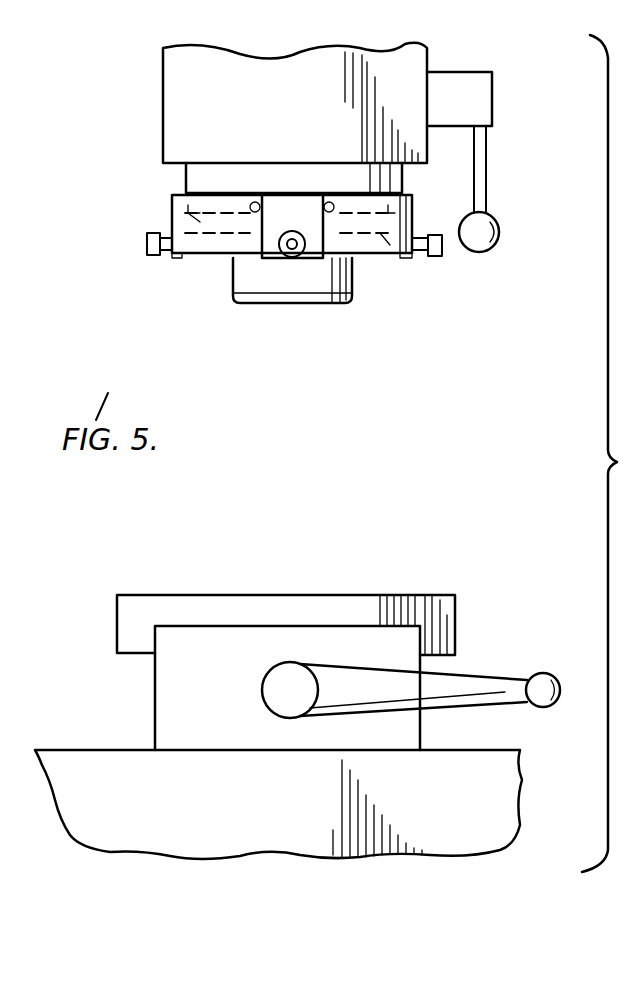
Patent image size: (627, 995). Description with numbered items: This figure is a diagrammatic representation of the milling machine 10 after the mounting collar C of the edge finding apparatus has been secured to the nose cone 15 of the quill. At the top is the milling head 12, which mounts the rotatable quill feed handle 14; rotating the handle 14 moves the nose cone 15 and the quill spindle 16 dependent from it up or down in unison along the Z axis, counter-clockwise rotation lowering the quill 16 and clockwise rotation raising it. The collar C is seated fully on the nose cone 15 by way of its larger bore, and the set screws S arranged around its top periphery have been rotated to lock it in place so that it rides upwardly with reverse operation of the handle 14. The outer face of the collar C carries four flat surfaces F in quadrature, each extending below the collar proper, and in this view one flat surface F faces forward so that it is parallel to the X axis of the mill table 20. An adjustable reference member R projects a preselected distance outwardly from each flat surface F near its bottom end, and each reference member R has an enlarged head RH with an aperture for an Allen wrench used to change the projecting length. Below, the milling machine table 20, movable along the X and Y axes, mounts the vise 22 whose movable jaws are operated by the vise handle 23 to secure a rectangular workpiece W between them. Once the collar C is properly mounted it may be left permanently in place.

The milling machine 10 is at (522, 408).
The milling head 12 is at (327, 103).
The quill feed handle 14 is at (498, 228).
The nose cone 15 is at (186, 180).
The quill spindle 16 is at (313, 282).
The milling machine table 20 is at (278, 804).
The vise 22 is at (334, 640).
The vise handle 23 is at (544, 672).
The collar C is at (172, 205).
The flat surfaces F is at (294, 205).
The reference member R is at (147, 244).
The enlarged head RH is at (283, 255).
The set screws S is at (250, 208).
The workpiece W is at (228, 600).